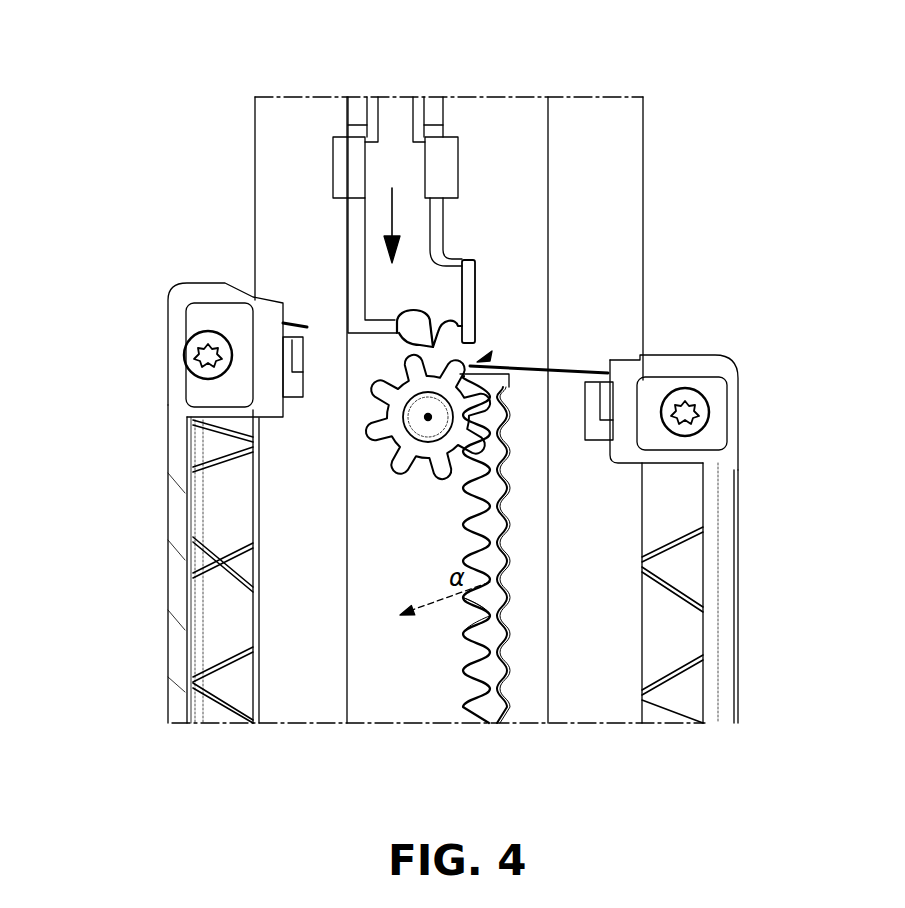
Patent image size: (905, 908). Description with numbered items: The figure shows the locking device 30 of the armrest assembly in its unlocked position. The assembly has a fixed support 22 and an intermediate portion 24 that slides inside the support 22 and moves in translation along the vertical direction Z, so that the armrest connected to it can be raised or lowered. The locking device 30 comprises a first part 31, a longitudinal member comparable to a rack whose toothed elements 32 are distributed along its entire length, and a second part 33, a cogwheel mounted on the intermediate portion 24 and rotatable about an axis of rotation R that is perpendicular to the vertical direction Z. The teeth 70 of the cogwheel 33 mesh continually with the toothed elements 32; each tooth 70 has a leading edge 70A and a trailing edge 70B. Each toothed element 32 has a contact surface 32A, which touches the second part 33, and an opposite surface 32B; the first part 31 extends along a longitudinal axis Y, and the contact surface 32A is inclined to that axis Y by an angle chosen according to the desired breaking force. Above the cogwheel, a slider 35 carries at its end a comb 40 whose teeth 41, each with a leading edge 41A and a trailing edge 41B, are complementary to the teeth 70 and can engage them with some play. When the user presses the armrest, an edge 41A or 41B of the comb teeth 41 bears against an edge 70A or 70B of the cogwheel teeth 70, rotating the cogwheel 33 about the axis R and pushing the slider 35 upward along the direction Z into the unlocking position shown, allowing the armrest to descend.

The support 22 is at (600, 498).
The intermediate portion 24 is at (587, 183).
The locking device 30 is at (489, 356).
The first part 31 is at (500, 623).
The toothed elements 32 is at (480, 620).
The contact surface 32A is at (465, 616).
The opposite surface 32B is at (473, 633).
The second part 33 is at (407, 460).
The slider 35 is at (397, 112).
The comb 40 is at (430, 327).
The teeth 41 is at (427, 317).
The leading edge 41A is at (432, 343).
The trailing edge 41B is at (475, 262).
The teeth 70 is at (407, 375).
The leading edge 70A is at (406, 366).
The trailing edge 70B is at (412, 356).
The axis of rotation R is at (428, 417).
The longitudinal axis Y is at (462, 598).
The vertical direction Z is at (53, 347).